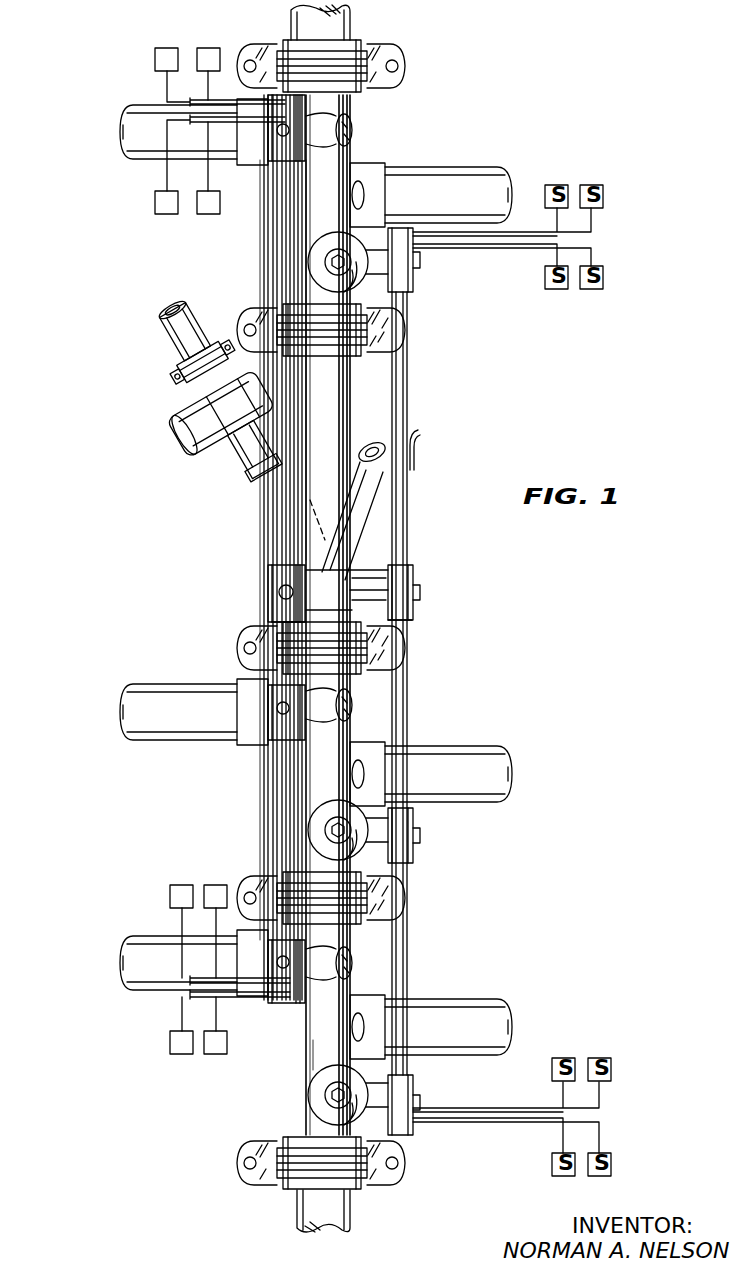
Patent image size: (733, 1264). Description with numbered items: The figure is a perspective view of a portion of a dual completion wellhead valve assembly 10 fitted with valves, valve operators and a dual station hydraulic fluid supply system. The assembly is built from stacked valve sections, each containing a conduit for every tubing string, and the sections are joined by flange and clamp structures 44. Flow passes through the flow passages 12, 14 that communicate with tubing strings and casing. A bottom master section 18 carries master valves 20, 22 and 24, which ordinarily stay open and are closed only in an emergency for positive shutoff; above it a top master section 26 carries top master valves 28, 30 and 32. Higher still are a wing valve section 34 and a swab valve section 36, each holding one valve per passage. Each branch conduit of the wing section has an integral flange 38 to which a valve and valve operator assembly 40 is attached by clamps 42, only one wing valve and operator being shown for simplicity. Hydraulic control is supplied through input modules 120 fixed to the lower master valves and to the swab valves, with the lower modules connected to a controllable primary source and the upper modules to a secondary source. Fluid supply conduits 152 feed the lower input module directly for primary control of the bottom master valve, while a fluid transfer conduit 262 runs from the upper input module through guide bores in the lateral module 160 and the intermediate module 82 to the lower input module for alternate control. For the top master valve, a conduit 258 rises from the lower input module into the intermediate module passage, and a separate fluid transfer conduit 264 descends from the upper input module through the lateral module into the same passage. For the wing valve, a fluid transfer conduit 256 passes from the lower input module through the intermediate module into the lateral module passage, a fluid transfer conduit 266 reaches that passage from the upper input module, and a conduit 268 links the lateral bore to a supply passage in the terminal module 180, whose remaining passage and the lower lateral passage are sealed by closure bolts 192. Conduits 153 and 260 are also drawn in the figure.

The wellhead valve assembly 10 is at (290, 1100).
The flow passage 12 is at (300, 1224).
The flow passage 14 is at (342, 12).
The bottom master section 18 is at (316, 1056).
The master valve 20 is at (316, 1100).
The master valve 22 is at (362, 1026).
The master valve 24 is at (352, 960).
The top master section 26 is at (358, 732).
The top master valve 28 is at (412, 822).
The top master valve 30 is at (362, 766).
The top master valve 32 is at (336, 705).
The wing valve section 34 is at (335, 382).
The swab valve section 36 is at (352, 150).
The integral flange 38 is at (265, 492).
The valve and valve operator assembly 40 is at (200, 392).
The clamp 42 is at (185, 345).
The flange and clamp structure 44 is at (258, 318).
The intermediate module 82 is at (285, 716).
The input module 120 is at (270, 140).
The fluid supply conduit 152 is at (246, 985).
The lead clip 153 is at (250, 116).
The lateral module 160 is at (272, 576).
The terminal module 180 is at (246, 430).
The closure bolt 192 is at (260, 614).
The fluid transfer conduit 256 is at (276, 858).
The conduit 258 is at (282, 828).
The rod 260 is at (292, 786).
The fluid transfer conduit 262 is at (296, 235).
The fluid transfer conduit 264 is at (283, 513).
The fluid transfer conduit 266 is at (268, 216).
The conduit 268 is at (270, 540).